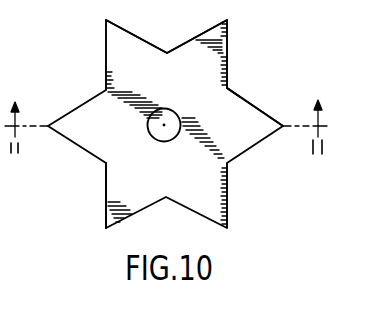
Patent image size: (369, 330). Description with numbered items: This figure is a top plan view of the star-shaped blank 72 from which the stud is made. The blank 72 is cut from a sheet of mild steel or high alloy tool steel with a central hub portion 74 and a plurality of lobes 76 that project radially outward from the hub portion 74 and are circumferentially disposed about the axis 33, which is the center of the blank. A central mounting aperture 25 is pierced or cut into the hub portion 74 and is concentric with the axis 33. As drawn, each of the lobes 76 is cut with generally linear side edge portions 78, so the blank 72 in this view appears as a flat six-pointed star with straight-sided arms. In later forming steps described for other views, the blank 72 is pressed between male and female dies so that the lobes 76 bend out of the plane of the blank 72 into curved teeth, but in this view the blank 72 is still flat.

The star-shaped blank 72 is at (268, 63).
The central hub portion 74 is at (225, 88).
The radially outwardly projecting lobes 76 is at (201, 34).
The generally linear side edge portions 78 is at (255, 106).
The central mounting aperture 25 is at (172, 117).
The axis 33 is at (165, 125).